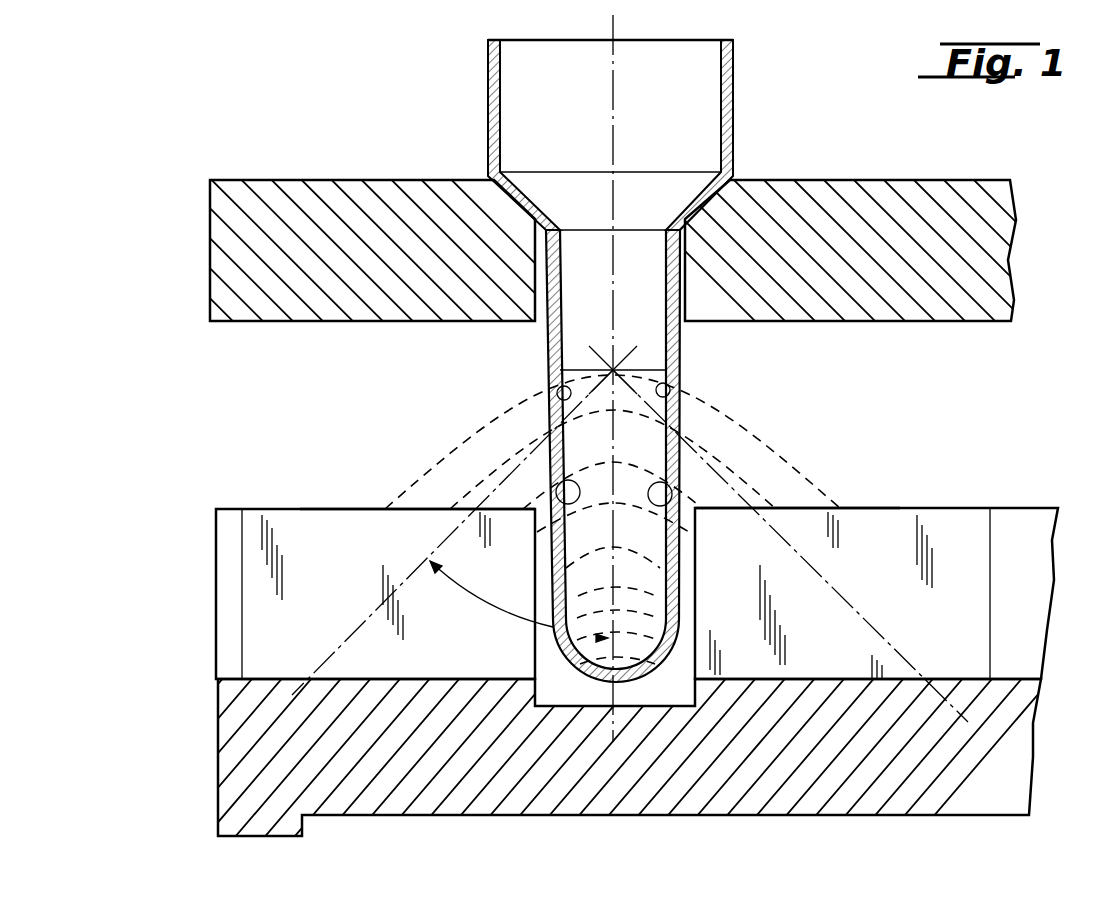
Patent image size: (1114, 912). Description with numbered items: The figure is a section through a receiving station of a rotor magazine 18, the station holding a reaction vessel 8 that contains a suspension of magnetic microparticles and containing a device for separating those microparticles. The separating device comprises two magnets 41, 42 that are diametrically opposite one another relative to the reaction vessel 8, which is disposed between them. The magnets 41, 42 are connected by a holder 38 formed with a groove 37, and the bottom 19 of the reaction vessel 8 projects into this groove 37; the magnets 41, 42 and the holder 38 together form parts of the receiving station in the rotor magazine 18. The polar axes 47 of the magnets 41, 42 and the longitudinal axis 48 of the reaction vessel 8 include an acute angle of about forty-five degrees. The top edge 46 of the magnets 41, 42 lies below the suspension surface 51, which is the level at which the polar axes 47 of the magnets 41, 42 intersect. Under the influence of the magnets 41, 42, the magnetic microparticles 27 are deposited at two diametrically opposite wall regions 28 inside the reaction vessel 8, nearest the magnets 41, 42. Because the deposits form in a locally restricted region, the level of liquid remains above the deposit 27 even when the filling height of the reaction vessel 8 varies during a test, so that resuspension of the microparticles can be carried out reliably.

The reaction vessel 8 is at (735, 93).
The rotor magazine 18 is at (908, 178).
The bottom of the reaction vessel 19 is at (635, 684).
The magnetic microparticles 27 is at (583, 492).
The wall regions 28 is at (566, 390).
The groove 37 is at (666, 700).
The holder 38 is at (240, 770).
The magnet 41 is at (931, 508).
The magnet 42 is at (297, 509).
The top edge of the magnets 46 is at (378, 506).
The polar axes 47 is at (373, 613).
The longitudinal axis of the reaction vessel 48 is at (613, 101).
The suspension surface 51 is at (573, 368).